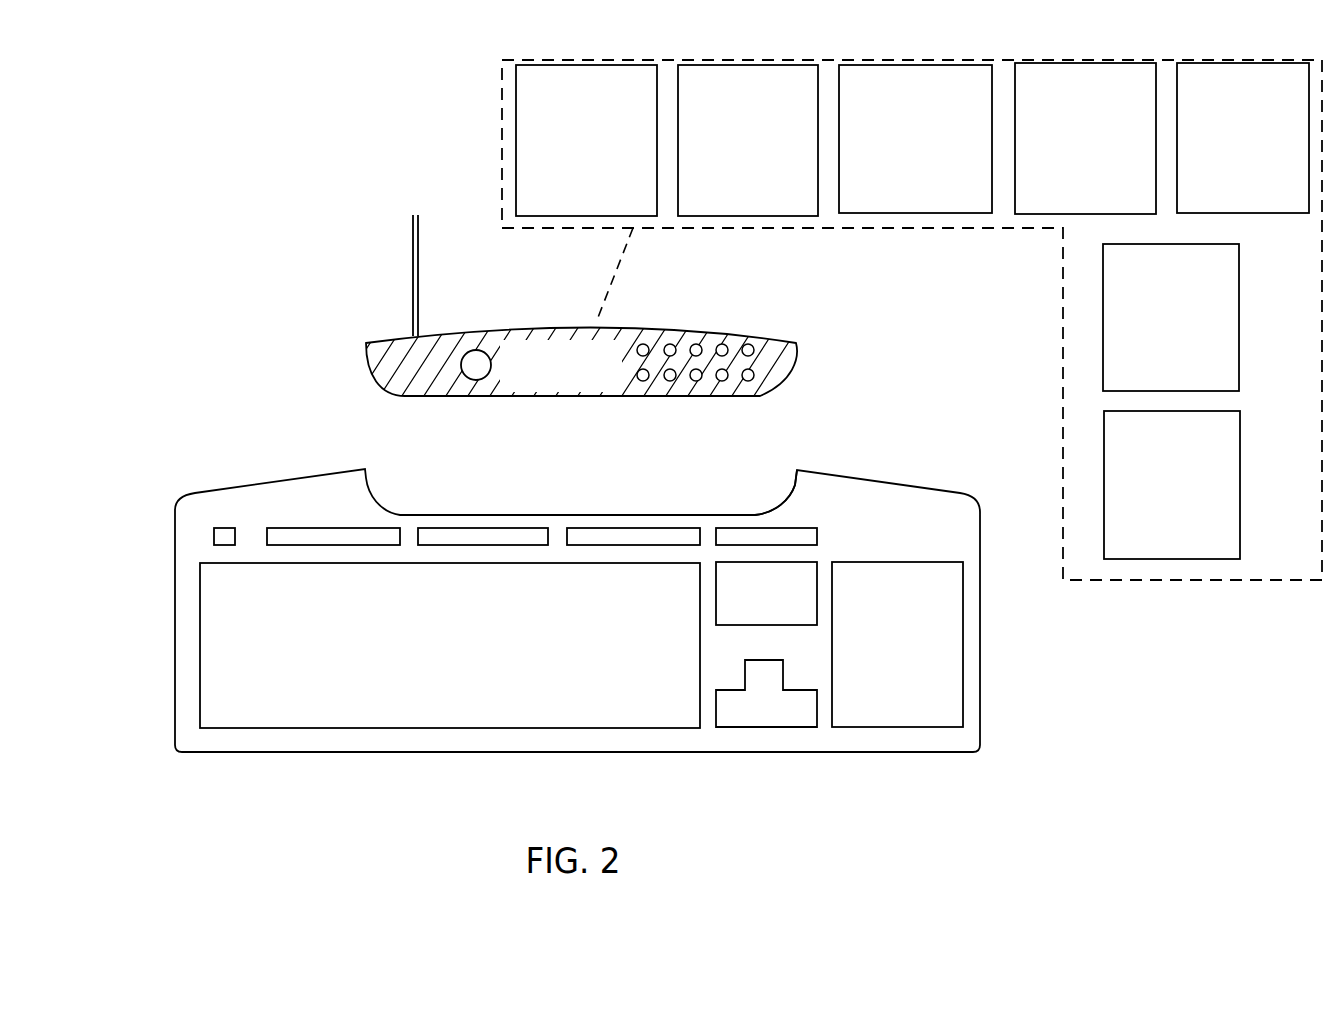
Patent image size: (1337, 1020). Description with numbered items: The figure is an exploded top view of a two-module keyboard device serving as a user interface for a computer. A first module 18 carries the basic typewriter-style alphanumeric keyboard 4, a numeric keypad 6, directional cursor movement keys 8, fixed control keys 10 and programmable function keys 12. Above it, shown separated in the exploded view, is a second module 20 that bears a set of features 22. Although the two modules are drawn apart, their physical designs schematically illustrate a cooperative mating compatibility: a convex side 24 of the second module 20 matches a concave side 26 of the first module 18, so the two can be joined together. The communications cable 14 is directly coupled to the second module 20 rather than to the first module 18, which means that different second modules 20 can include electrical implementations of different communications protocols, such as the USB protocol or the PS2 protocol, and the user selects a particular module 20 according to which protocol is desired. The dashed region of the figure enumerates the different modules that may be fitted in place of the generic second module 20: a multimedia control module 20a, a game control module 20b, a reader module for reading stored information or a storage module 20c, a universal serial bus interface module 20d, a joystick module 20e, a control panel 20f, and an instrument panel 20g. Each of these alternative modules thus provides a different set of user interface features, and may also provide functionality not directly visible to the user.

The alphanumeric keyboard 4 is at (222, 651).
The numeric keypad 6 is at (950, 626).
The directional cursor movement keys 8 is at (781, 715).
The fixed control keys 10 is at (808, 575).
The programmable function keys 12 is at (295, 528).
The communications cable 14 is at (412, 263).
The first module 18 is at (386, 762).
The second module 20 is at (777, 336).
The multimedia control module 20a is at (569, 190).
The game control module 20b is at (731, 190).
The reader module for reading information stored or a storage module 20c is at (898, 188).
The universal serial bus interface module 20d is at (1068, 203).
The joystick module 20e is at (1226, 170).
The control panel 20f is at (1156, 355).
The instrument panel 20g is at (1155, 525).
The set of features 22 is at (477, 350).
The convex side 24 is at (455, 398).
The concave side 26 is at (790, 487).